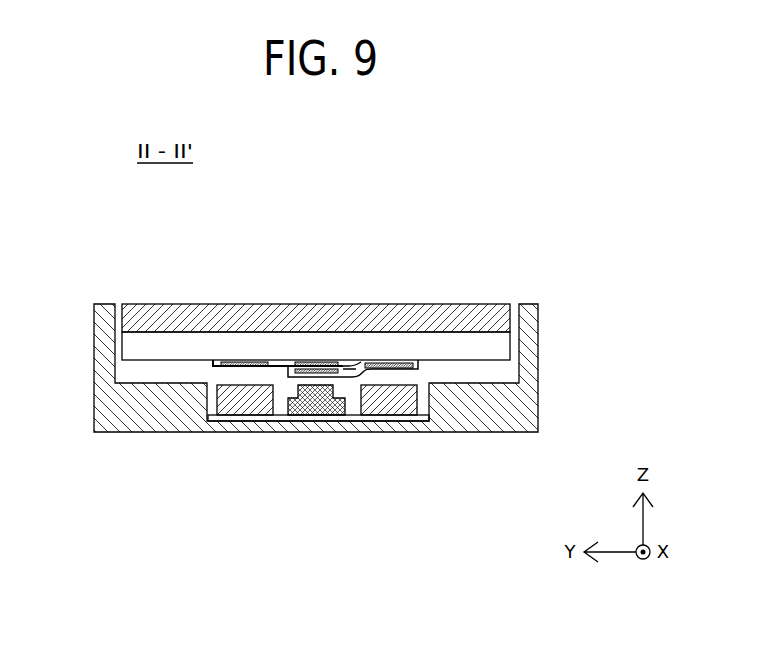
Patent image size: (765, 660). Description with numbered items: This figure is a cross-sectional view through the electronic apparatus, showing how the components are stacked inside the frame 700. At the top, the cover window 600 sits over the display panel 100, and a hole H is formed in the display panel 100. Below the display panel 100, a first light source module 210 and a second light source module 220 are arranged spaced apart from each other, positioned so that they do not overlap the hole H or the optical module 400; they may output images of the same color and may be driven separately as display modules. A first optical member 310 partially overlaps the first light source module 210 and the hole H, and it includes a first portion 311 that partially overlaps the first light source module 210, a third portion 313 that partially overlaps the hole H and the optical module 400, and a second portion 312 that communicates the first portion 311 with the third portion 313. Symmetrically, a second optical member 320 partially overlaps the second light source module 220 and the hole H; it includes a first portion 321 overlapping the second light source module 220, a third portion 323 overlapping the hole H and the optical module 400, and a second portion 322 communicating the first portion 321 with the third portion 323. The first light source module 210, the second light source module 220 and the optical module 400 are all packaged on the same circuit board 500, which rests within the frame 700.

The display panel 100 is at (447, 347).
The first light source module 210 is at (247, 412).
The second light source module 220 is at (403, 408).
The first optical member 310 is at (213, 362).
The first portion 311 is at (245, 362).
The second portion 312 is at (278, 365).
The third portion 313 is at (293, 362).
The second optical member 320 is at (422, 362).
The first portion 321 is at (385, 365).
The second portion 322 is at (356, 370).
The third portion 323 is at (328, 371).
The optical module 400 is at (320, 410).
The circuit board 500 is at (372, 418).
The cover window 600 is at (493, 320).
The frame 700 is at (520, 404).
The hole H is at (312, 338).